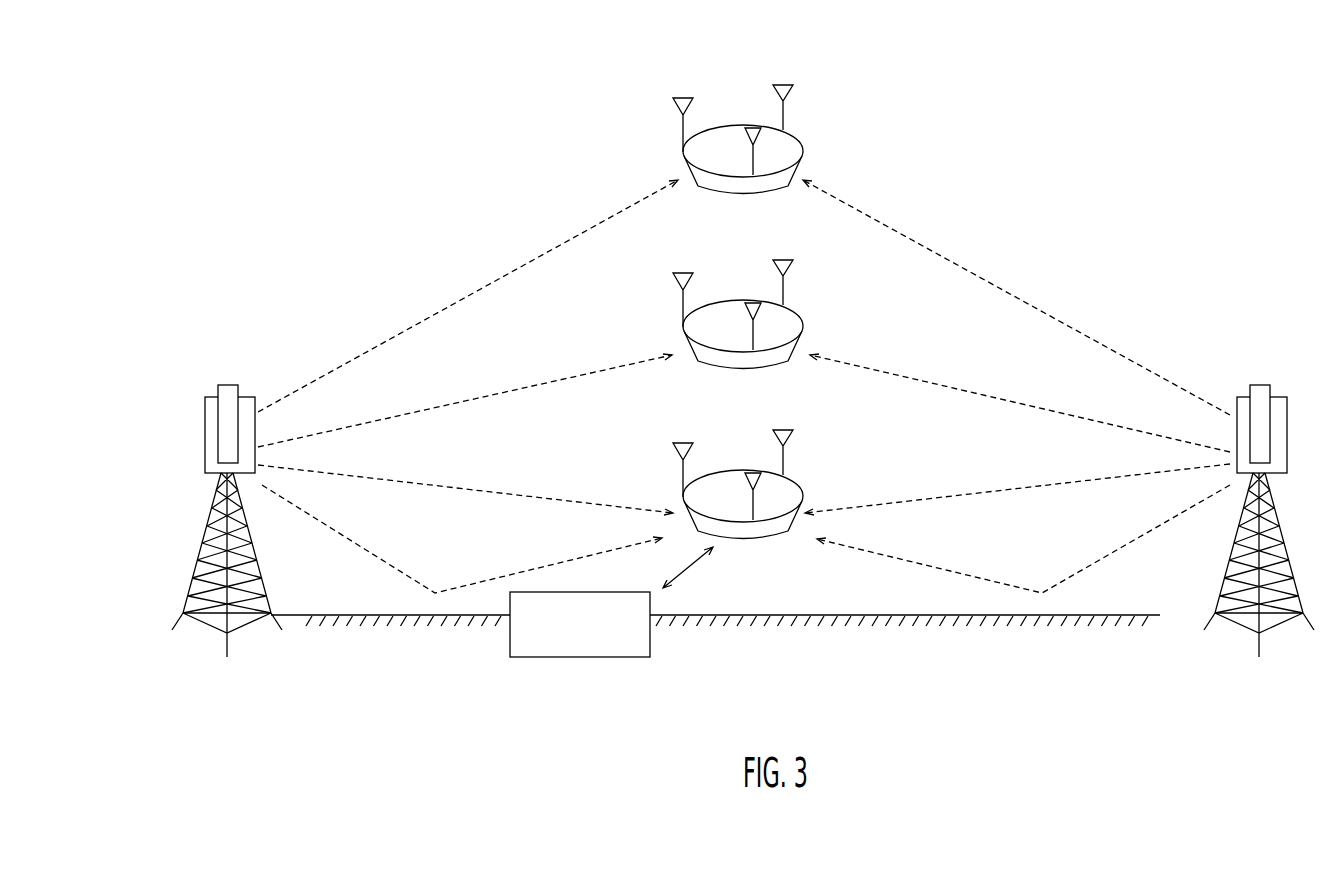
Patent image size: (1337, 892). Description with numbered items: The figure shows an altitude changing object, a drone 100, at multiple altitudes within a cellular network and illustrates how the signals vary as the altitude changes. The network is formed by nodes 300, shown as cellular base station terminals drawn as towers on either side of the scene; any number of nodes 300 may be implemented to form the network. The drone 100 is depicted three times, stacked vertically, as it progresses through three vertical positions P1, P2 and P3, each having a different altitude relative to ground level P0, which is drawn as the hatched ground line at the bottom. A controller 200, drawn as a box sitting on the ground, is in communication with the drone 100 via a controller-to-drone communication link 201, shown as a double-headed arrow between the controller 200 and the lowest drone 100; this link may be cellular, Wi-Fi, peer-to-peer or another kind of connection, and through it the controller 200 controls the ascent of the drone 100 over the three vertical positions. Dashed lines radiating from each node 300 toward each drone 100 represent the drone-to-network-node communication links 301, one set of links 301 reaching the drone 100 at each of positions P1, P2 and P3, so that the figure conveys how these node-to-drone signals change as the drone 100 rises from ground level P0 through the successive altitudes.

The drone 100 is at (795, 336).
The controller 200 is at (631, 657).
The controller-to-drone communication link 201 is at (706, 568).
The node 300 is at (255, 408).
The drone-to-network-node communication link 301 is at (489, 285).
The ground level P0 is at (953, 616).
The first vertical position P1 is at (818, 523).
The second vertical position P2 is at (818, 337).
The third vertical position P3 is at (818, 143).